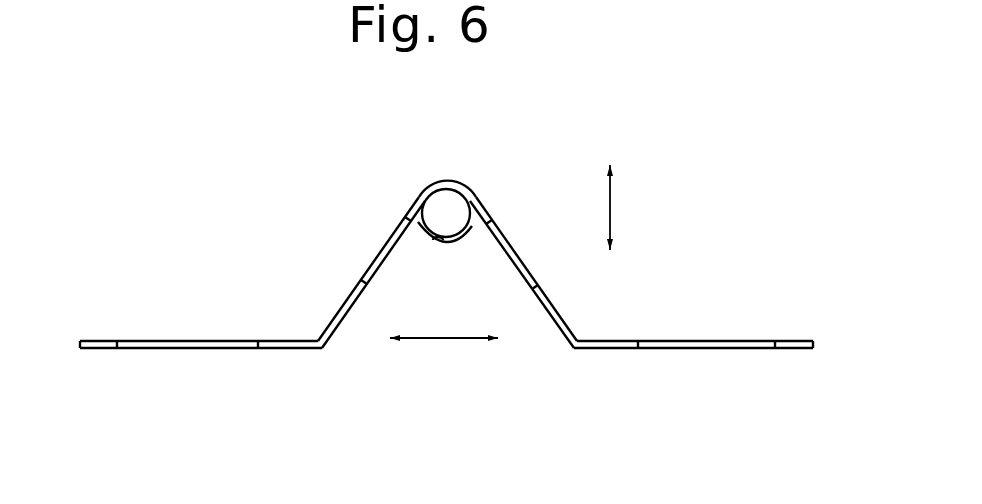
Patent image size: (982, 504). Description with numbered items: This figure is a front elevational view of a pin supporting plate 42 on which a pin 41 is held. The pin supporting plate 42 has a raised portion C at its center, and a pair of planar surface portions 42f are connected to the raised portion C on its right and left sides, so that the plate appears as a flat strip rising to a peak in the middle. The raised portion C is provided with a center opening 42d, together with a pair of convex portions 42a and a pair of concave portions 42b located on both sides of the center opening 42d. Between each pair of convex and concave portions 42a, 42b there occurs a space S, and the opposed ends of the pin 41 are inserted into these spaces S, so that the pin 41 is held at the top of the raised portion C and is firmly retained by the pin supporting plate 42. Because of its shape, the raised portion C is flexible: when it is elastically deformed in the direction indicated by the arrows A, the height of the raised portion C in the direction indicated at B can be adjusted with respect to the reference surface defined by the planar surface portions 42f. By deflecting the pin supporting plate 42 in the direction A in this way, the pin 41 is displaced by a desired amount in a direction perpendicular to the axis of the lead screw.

The pin 41 is at (456, 207).
The pin supporting plate 42 is at (575, 316).
The convex portion 42a is at (418, 198).
The concave portion 42b is at (425, 243).
The center opening 42d is at (371, 267).
The planar surface portion 42f is at (117, 341).
The space S is at (441, 212).
The direction of elastic deformation A is at (440, 341).
The height direction of raised portion B is at (612, 205).
The raised portion C is at (513, 234).